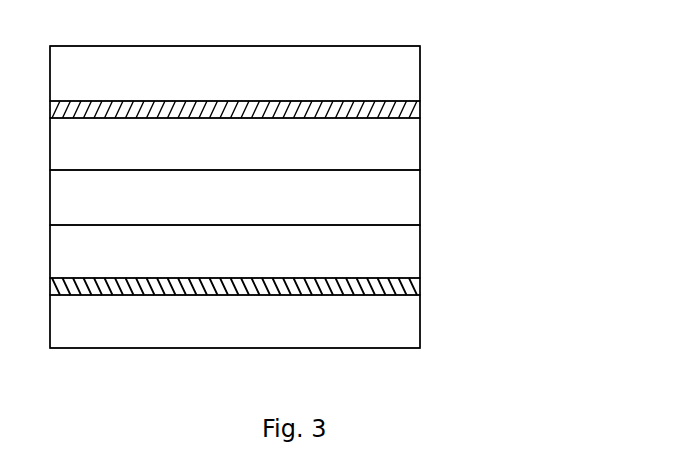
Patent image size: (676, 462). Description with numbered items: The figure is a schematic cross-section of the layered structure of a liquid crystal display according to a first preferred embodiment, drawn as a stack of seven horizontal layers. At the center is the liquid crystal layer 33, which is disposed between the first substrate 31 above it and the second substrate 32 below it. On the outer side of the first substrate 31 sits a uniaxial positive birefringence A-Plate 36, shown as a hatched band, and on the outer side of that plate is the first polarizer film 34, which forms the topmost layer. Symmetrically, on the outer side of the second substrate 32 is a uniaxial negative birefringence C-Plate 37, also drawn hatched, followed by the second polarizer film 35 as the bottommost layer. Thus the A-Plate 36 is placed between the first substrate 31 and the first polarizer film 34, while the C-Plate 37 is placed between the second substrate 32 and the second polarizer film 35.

The first polarizer film 34 is at (421, 72).
The uniaxial positive birefringence A-Plate 36 is at (421, 108).
The first substrate 31 is at (421, 144).
The liquid crystal layer 33 is at (421, 198).
The second substrate 32 is at (421, 250).
The uniaxial negative birefringence C-Plate 37 is at (421, 285).
The second polarizer film 35 is at (421, 320).